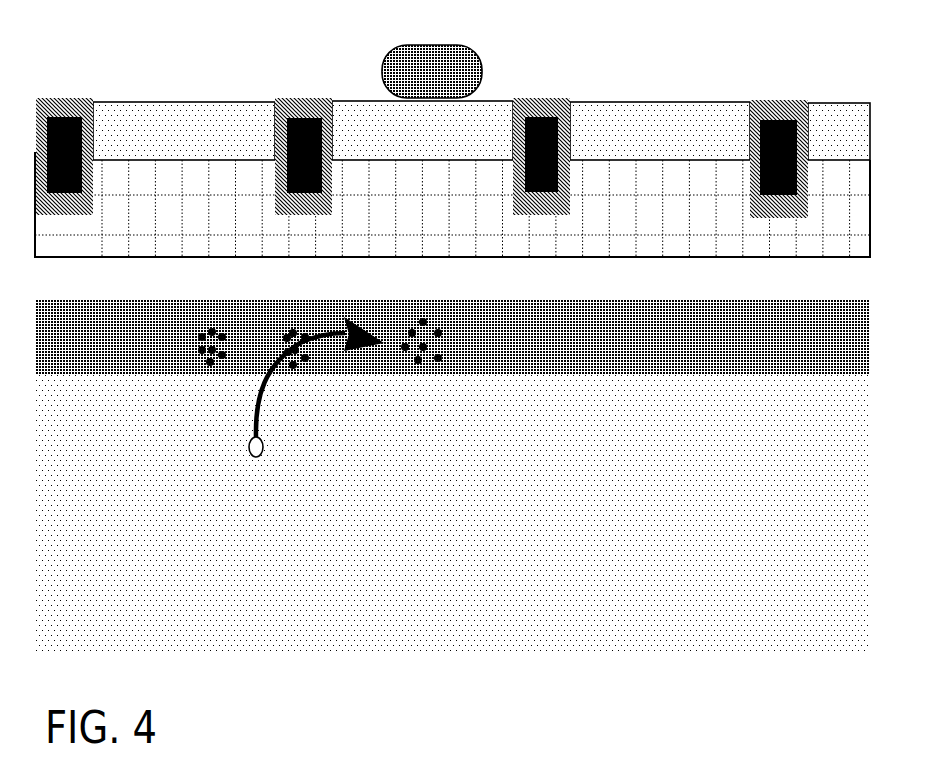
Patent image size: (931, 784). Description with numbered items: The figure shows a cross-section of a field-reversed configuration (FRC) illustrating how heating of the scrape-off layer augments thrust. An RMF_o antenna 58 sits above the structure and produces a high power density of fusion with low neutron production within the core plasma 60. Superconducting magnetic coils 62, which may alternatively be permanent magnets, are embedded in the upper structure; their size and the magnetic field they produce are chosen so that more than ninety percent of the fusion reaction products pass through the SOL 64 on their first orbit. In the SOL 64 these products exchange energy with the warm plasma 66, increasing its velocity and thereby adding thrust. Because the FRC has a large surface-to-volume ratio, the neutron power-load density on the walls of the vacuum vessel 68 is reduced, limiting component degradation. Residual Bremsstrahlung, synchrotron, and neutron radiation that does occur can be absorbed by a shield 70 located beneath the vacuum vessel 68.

The RMF_o antenna 58 is at (421, 62).
The core plasma 60 is at (452, 477).
The superconducting magnetic coils 62 is at (46, 91).
The SOL 64 is at (316, 387).
The warm plasma 66 is at (304, 342).
The vacuum vessel 68 is at (481, 130).
The shield 70 is at (452, 204).